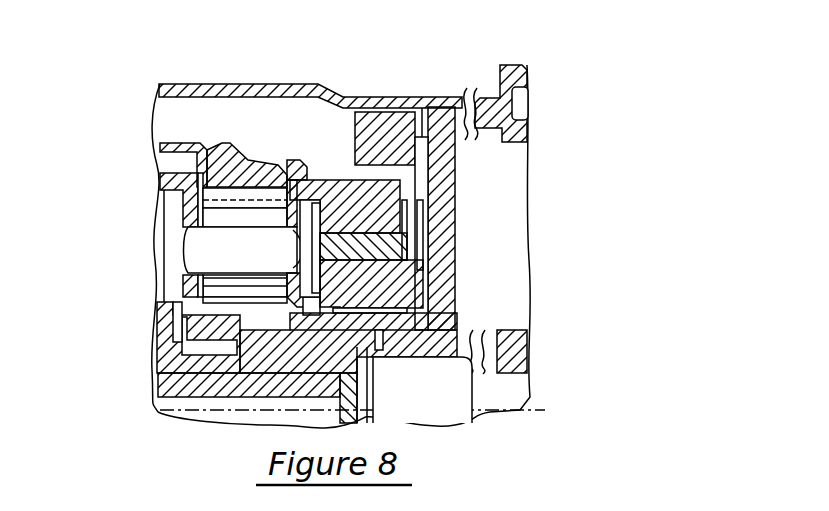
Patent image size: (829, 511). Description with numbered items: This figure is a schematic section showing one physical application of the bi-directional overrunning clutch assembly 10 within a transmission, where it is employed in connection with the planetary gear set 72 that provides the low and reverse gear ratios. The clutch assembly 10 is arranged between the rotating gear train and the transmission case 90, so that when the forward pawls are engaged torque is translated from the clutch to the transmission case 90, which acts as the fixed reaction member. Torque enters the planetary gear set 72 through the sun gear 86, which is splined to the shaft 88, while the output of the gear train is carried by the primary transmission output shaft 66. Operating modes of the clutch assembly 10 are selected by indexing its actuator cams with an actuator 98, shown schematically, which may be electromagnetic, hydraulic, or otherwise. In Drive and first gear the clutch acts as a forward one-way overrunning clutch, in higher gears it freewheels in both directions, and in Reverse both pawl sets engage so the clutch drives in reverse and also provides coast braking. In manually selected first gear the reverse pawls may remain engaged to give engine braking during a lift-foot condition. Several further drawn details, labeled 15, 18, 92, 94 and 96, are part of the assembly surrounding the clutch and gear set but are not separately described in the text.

The bi-directional overrunning clutch assembly 10 is at (482, 236).
The clutch housing 15 is at (470, 268).
The hub 18 is at (397, 188).
The primary transmission output shaft 66 is at (480, 330).
The planetary gear set 72 is at (146, 126).
The sun gear 86 is at (200, 336).
The shaft 88 is at (200, 388).
The transmission case 90 is at (277, 84).
The bearing carrier 92 is at (229, 212).
The pin 94 is at (192, 223).
The retaining ring 96 is at (232, 160).
The actuator 98 is at (380, 140).